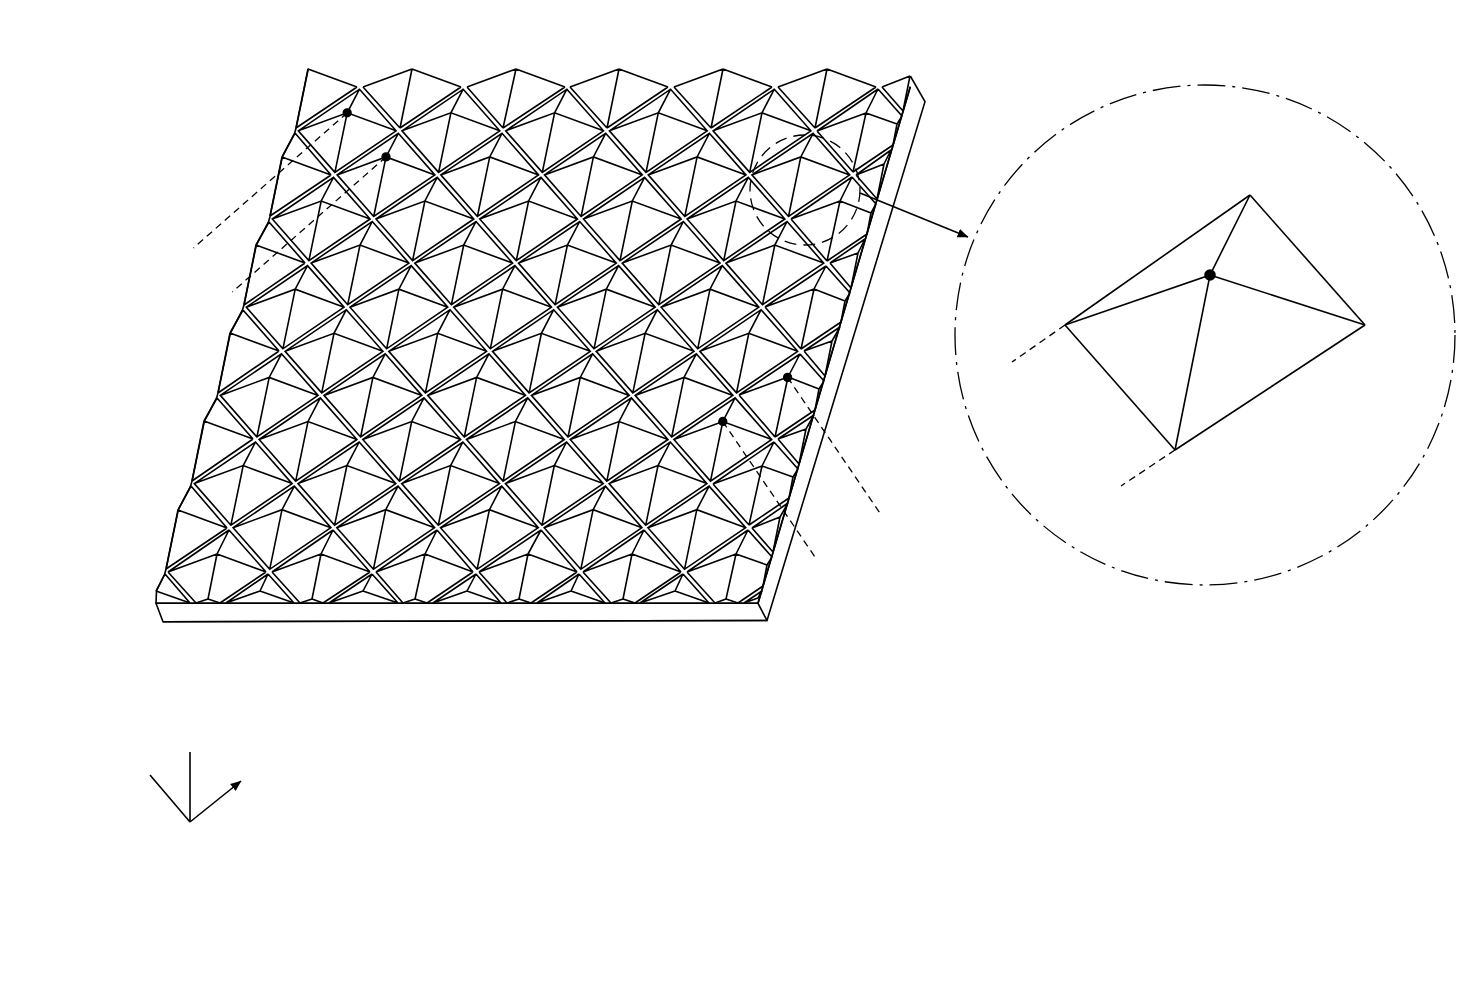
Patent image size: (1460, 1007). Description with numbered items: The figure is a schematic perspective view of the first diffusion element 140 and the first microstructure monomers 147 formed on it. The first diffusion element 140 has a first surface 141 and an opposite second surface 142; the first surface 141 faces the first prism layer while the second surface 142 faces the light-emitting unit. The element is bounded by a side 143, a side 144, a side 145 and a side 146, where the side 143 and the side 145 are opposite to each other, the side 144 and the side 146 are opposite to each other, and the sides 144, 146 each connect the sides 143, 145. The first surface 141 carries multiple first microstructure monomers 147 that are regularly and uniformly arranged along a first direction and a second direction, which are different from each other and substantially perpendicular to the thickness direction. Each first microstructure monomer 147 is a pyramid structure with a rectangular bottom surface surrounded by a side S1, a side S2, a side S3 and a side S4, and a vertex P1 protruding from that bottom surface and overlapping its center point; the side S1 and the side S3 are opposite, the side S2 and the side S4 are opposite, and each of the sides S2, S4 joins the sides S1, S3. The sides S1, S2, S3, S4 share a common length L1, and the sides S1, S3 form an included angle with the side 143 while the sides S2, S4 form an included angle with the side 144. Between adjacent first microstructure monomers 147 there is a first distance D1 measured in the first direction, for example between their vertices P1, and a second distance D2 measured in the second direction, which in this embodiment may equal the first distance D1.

The first diffusion element 140 is at (182, 614).
The first surface 141 is at (203, 600).
The second surface 142 is at (200, 628).
The side 143 is at (445, 626).
The side 144 is at (840, 361).
The side 145 is at (576, 47).
The side 146 is at (204, 356).
The first microstructure monomer 147 is at (1292, 508).
The vertex P1 is at (1222, 268).
The side S1 is at (1284, 398).
The side S2 is at (1316, 257).
The side S3 is at (1166, 248).
The side S4 is at (1140, 428).
The first distance D1 is at (876, 518).
The second distance D2 is at (229, 289).
The length L1 is at (1125, 488).